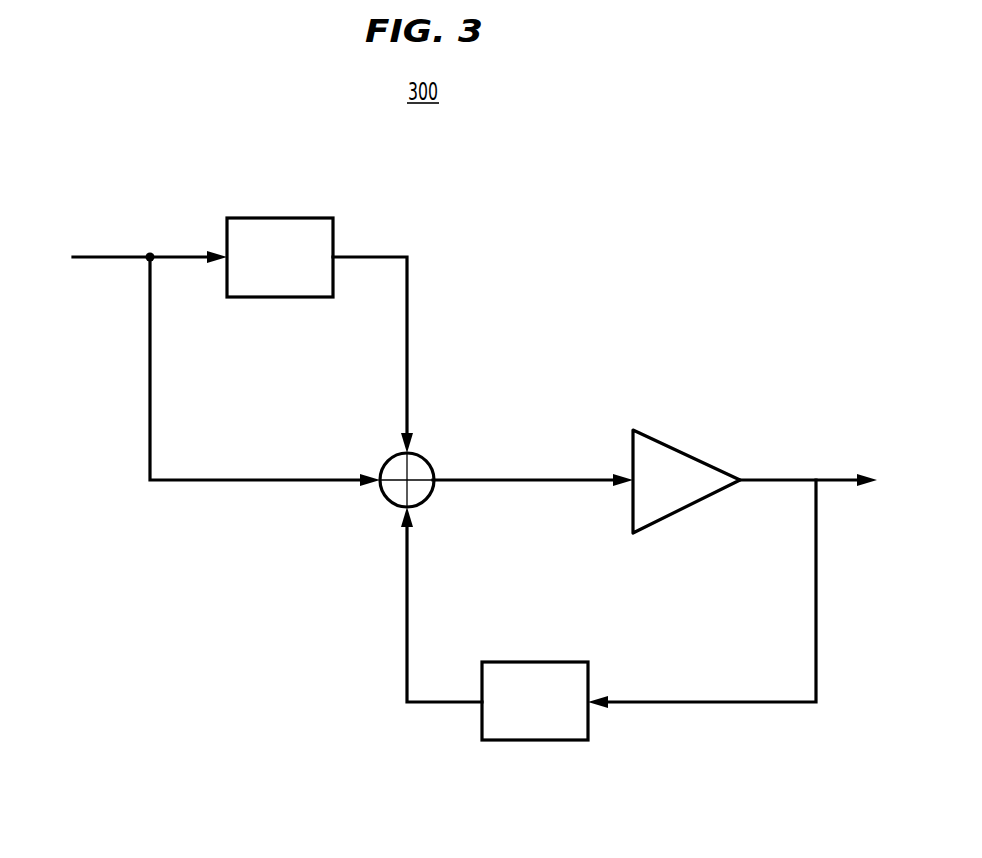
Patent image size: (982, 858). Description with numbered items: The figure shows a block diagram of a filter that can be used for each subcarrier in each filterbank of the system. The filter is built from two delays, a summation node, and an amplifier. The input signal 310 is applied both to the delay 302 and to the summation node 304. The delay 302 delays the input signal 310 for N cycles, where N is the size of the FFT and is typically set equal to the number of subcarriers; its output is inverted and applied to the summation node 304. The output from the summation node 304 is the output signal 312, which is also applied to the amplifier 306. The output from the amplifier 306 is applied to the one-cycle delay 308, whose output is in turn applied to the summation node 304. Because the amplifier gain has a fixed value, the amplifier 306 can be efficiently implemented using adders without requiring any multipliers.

The delay 302 is at (279, 218).
The summation node 304 is at (388, 500).
The amplifier 306 is at (688, 456).
The one-cycle delay 308 is at (531, 742).
The input signal 310 is at (100, 257).
The output signal 312 is at (772, 480).